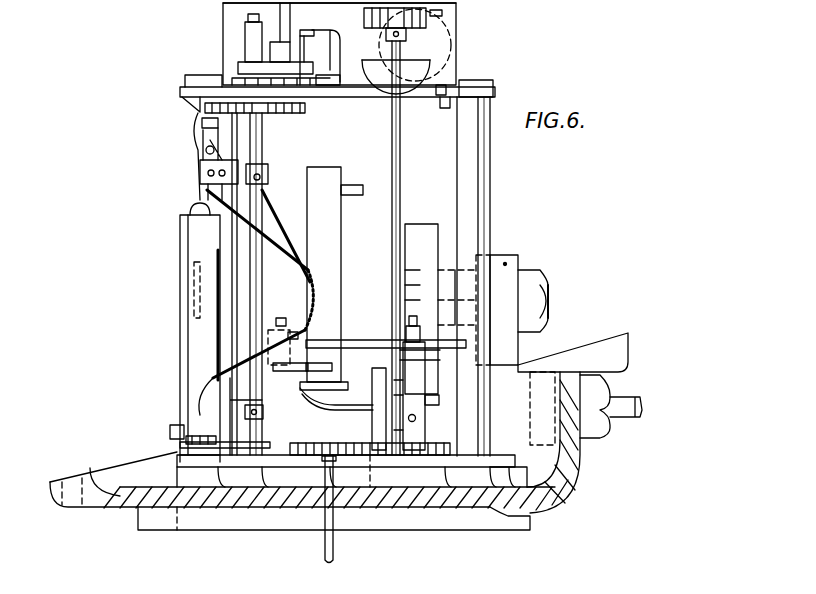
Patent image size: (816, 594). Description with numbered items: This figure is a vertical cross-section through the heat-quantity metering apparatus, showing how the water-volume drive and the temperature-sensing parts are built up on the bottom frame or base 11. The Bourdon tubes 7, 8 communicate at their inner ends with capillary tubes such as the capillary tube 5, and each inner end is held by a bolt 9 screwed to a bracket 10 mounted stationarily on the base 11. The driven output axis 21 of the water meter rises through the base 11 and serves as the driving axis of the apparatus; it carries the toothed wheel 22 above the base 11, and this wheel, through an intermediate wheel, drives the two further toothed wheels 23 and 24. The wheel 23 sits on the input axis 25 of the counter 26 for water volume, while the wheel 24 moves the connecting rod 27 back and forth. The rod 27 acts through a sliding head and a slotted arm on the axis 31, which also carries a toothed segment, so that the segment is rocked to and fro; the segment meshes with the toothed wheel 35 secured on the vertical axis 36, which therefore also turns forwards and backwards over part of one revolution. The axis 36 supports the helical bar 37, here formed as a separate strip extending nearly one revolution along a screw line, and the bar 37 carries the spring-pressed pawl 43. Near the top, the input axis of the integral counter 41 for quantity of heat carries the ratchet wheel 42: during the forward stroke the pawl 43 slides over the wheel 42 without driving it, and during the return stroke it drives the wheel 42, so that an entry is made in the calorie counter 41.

The capillary tube 5 is at (623, 417).
The Bourdon tube 7 is at (330, 250).
The Bourdon tube 8 is at (417, 234).
The bolt 9 is at (549, 301).
The bracket 10 is at (506, 264).
The base 11 is at (468, 506).
The driven output axis 21 is at (322, 546).
The toothed wheel 22 is at (305, 452).
The toothed wheel 23 is at (370, 456).
The toothed wheel 24 is at (440, 446).
The input axis 25 is at (396, 124).
The counter 26 is at (432, 42).
The connecting rod 27 is at (352, 340).
The axis 31 is at (235, 241).
The toothed wheel 35 is at (270, 437).
The vertical axis 36 is at (262, 195).
The helical bar 37 is at (204, 188).
The integral counter 41 is at (240, 33).
The ratchet wheel 42 is at (304, 108).
The spring-pressed pawl 43 is at (202, 122).